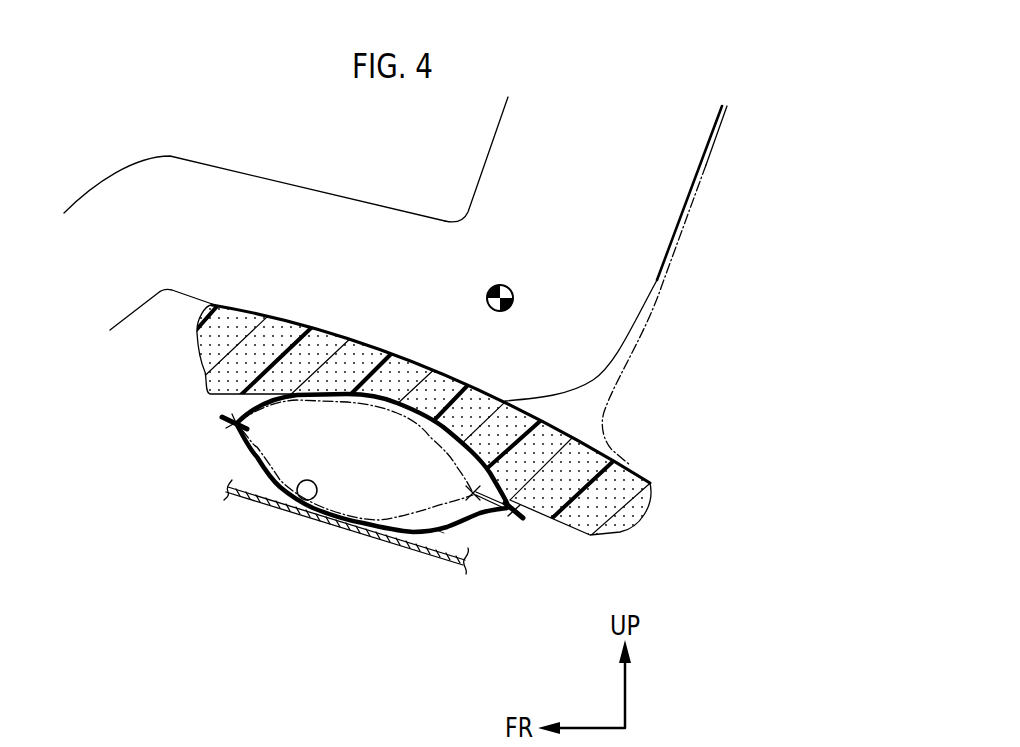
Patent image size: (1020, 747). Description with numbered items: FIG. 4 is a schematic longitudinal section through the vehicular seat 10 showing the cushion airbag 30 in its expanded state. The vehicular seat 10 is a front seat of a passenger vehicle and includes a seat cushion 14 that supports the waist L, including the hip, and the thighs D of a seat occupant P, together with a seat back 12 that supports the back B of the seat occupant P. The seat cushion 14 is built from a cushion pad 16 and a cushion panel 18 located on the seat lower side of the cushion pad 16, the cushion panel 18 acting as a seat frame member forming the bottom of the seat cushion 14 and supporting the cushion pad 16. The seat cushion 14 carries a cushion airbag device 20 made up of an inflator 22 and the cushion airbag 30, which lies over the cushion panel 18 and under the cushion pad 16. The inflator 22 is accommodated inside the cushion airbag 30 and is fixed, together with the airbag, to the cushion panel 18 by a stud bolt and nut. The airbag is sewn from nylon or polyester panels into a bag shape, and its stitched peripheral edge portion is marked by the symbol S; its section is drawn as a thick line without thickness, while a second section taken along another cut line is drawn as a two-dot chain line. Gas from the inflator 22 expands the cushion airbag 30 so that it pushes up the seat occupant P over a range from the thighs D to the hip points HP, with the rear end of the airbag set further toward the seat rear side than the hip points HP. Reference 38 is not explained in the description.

The vehicular seat 10 is at (650, 551).
The seat back 12 is at (684, 204).
The seat cushion 14 is at (406, 327).
The cushion pad 16 is at (294, 322).
The cushion panel 18 is at (343, 535).
The cushion airbag device 20 is at (530, 558).
The inflator 22 is at (318, 482).
The cushion airbag 30 is at (453, 520).
The seam line 38 is at (480, 500).
The thighs D is at (291, 182).
The seat occupant P is at (486, 136).
The back B is at (706, 168).
The waist L is at (657, 302).
The hip point HP is at (500, 315).
The stitched portion S is at (232, 425).